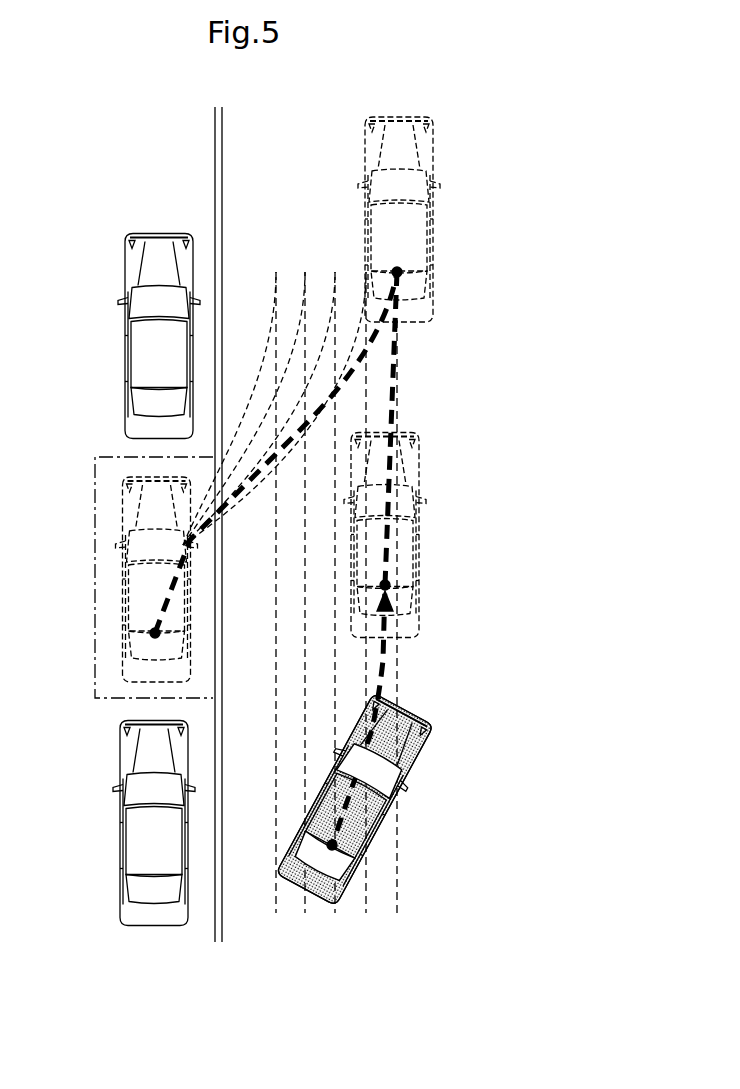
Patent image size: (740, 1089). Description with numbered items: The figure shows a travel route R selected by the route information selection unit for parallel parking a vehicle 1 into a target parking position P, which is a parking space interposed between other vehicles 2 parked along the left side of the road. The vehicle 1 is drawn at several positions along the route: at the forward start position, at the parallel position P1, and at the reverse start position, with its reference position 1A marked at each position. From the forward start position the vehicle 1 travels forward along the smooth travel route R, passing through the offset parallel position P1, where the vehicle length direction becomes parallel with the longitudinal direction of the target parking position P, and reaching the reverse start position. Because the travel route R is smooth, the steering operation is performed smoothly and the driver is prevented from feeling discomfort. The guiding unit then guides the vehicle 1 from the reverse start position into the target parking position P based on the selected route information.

The vehicle 1 is at (122, 525).
The reference position 1A is at (335, 847).
The other vehicles 2 is at (150, 352).
The target parking position P is at (95, 577).
The parallel position P1 is at (390, 587).
The travel route R is at (398, 370).